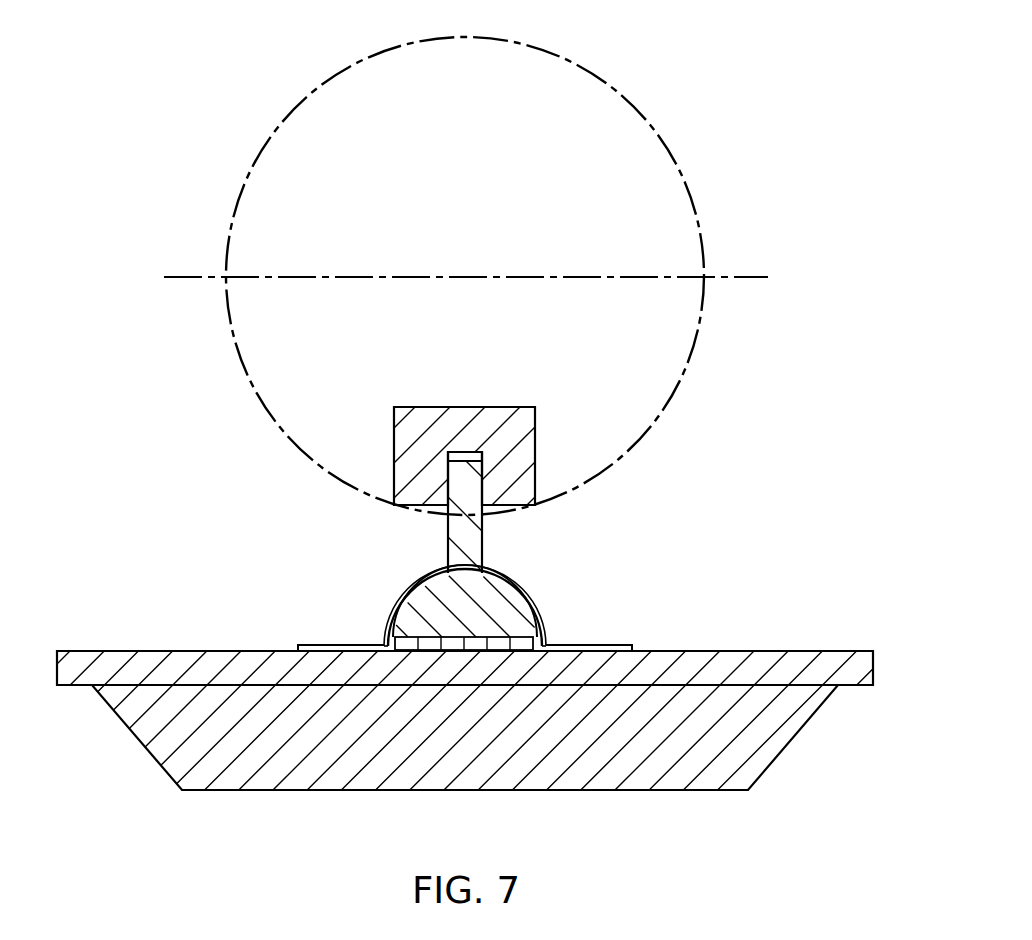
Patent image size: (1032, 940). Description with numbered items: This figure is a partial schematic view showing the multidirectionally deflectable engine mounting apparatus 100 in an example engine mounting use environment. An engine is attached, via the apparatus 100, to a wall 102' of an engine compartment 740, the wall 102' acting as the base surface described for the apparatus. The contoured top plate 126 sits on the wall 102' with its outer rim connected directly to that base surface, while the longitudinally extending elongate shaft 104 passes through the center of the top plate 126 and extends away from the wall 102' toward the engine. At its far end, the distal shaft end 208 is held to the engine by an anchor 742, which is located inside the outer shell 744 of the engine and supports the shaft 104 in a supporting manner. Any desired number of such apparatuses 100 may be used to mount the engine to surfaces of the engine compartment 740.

The engine compartment 740 is at (466, 276).
The outer shell 744 is at (667, 403).
The anchor 742 is at (417, 428).
The distal shaft end 208 is at (466, 446).
The elongate shaft 104 is at (490, 463).
The multidirectionally deflectable engine mounting apparatus 100 is at (427, 502).
The contoured top plate 126 is at (375, 607).
The wall 102' is at (465, 693).